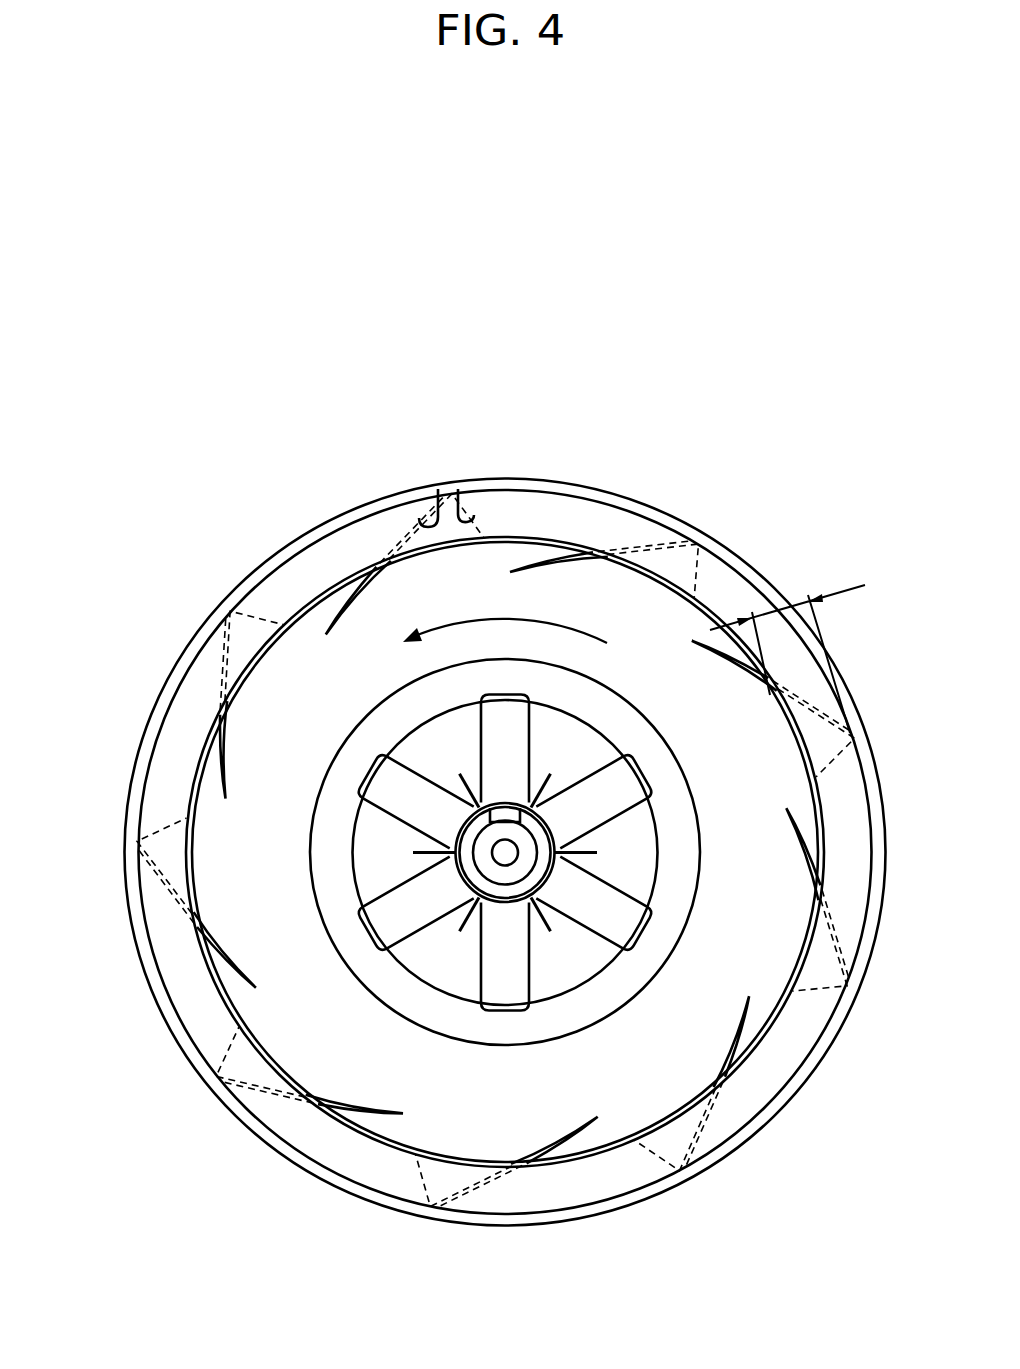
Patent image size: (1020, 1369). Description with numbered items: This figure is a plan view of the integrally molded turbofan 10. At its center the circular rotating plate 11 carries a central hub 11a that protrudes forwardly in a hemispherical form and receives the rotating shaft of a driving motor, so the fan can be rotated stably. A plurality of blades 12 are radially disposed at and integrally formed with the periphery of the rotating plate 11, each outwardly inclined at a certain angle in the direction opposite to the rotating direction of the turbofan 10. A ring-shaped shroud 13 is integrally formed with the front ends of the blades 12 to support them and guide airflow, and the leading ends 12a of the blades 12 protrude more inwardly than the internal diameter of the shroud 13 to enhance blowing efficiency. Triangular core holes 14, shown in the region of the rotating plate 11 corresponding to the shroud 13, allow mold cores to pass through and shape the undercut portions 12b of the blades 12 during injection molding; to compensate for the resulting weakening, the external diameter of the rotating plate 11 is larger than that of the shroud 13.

The turbofan 10 is at (465, 790).
The circular rotating plate 11 is at (622, 493).
The central hub 11a is at (541, 871).
The blades 12 is at (395, 545).
The leading ends 12a is at (337, 620).
The undercut portions 12b is at (440, 515).
The ring-shaped shroud 13 is at (185, 668).
The core holes 14 is at (458, 512).